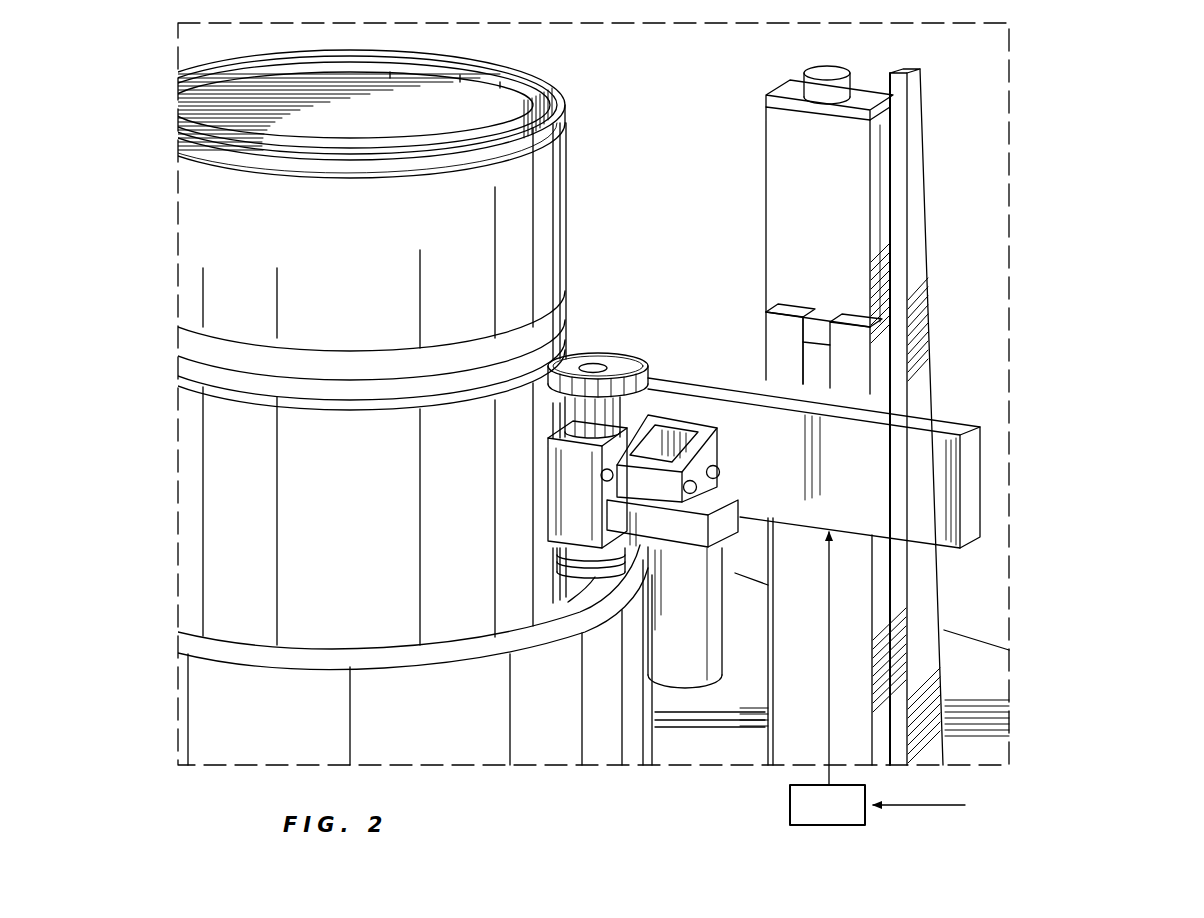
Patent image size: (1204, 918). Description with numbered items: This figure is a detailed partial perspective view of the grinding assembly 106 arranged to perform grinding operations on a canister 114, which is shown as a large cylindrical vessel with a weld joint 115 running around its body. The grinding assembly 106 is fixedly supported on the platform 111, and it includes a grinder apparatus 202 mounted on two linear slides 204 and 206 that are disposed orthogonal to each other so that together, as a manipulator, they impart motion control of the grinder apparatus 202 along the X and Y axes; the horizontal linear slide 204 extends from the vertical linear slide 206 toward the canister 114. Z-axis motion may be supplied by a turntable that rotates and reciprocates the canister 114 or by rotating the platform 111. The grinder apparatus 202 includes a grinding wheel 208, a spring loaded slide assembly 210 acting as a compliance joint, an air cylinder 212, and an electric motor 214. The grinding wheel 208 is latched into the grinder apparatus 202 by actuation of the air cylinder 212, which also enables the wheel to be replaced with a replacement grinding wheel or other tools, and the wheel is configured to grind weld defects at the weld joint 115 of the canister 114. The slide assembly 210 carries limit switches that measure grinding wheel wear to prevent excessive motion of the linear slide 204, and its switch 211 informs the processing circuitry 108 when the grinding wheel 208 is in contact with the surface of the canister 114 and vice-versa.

The grinding assembly 106 is at (1040, 77).
The processing circuitry 108 is at (938, 678).
The platform 111 is at (998, 682).
The canister 114 is at (567, 163).
The weld joint 115 is at (345, 400).
The grinder apparatus 202 is at (668, 356).
The linear slide 204 is at (900, 491).
The linear slide 206 is at (881, 126).
The grinding wheel 208 is at (571, 362).
The spring loaded slide assembly 210 is at (604, 458).
The switch 211 is at (700, 468).
The air cylinder 212 is at (580, 569).
The electric motor 214 is at (700, 668).